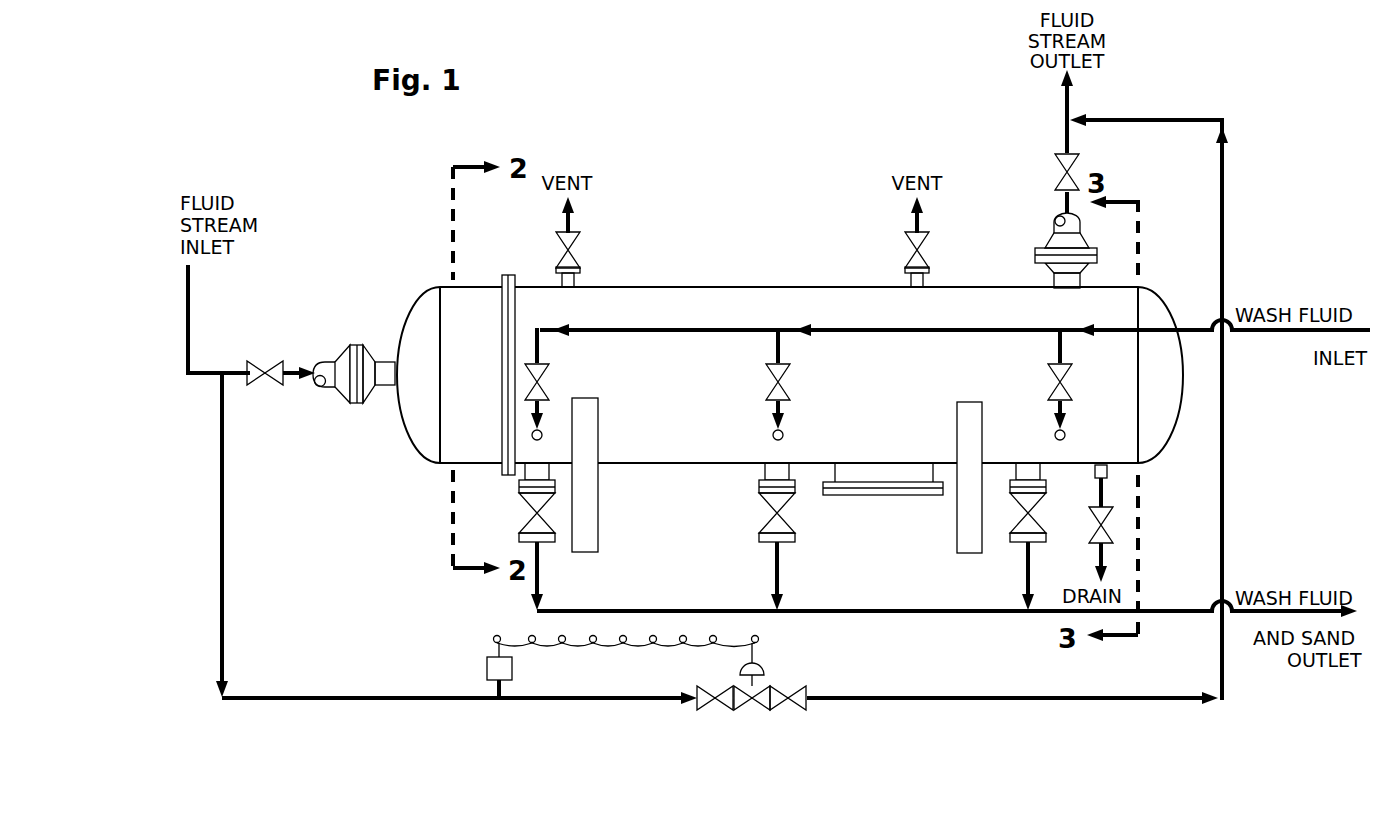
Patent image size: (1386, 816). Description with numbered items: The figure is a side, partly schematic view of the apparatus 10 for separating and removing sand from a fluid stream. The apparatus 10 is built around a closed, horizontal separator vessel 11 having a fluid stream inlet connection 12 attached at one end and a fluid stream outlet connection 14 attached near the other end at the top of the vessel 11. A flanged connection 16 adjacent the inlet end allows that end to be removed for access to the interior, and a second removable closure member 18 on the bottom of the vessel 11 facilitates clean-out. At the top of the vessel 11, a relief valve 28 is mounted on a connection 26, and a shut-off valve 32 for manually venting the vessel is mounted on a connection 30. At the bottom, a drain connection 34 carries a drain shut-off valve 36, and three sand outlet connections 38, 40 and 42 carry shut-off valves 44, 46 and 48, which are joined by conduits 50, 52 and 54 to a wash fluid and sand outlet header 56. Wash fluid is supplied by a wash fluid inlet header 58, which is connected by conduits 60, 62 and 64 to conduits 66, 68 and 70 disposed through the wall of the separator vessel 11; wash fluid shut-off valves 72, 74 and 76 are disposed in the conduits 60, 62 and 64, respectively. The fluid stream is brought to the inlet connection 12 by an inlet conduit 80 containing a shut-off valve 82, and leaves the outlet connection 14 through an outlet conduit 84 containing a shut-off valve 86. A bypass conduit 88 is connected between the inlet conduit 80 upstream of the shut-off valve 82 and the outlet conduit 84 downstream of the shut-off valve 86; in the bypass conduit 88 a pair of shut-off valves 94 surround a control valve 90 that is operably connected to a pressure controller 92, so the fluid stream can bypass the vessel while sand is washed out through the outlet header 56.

The apparatus 10 is at (764, 282).
The separator vessel 11 is at (684, 298).
The fluid stream inlet connection 12 is at (372, 362).
The fluid stream outlet connection 14 is at (1053, 266).
The flanged connection 16 is at (511, 284).
The second removable closure member 18 is at (882, 497).
The connection 26 is at (582, 283).
The relief valve 28 is at (558, 250).
The connection 30 is at (910, 284).
The shut-off valve 32 is at (928, 248).
The drain connection 34 is at (1109, 472).
The drain shut-off valve 36 is at (1114, 523).
The sand outlet connection 38 is at (526, 478).
The sand outlet connection 40 is at (766, 480).
The sand outlet connection 42 is at (1040, 475).
The shut-off valve 44 is at (526, 518).
The shut-off valve 46 is at (766, 516).
The shut-off valve 48 is at (1044, 530).
The conduit 50 is at (540, 571).
The conduit 52 is at (781, 572).
The conduit 54 is at (1025, 577).
The wash fluid and sand outlet header 56 is at (936, 614).
The wash fluid inlet header 58 is at (876, 328).
The conduit 60 is at (541, 411).
The conduit 62 is at (781, 352).
The conduit 64 is at (1065, 411).
The conduit 66 is at (542, 435).
The conduit 68 is at (784, 436).
The conduit 70 is at (1066, 436).
The wash fluid shut-off valve 72 is at (547, 374).
The wash fluid shut-off valve 74 is at (766, 380).
The wash fluid shut-off valve 76 is at (1049, 371).
The inlet conduit 80 is at (236, 370).
The shut-off valve 82 is at (266, 368).
The outlet conduit 84 is at (1064, 118).
The shut-off valve 86 is at (1056, 161).
The bypass conduit 88 is at (441, 701).
The control valve 90 is at (752, 700).
The pressure controller 92 is at (513, 668).
The shut-off valves 94 is at (709, 702).